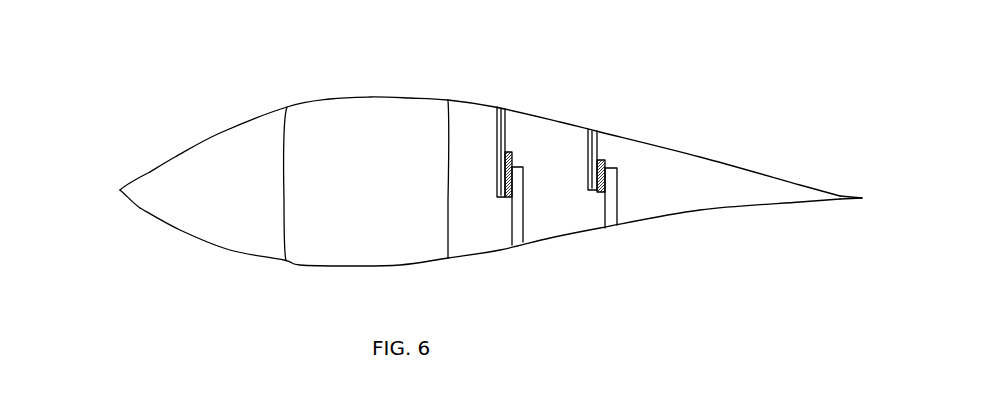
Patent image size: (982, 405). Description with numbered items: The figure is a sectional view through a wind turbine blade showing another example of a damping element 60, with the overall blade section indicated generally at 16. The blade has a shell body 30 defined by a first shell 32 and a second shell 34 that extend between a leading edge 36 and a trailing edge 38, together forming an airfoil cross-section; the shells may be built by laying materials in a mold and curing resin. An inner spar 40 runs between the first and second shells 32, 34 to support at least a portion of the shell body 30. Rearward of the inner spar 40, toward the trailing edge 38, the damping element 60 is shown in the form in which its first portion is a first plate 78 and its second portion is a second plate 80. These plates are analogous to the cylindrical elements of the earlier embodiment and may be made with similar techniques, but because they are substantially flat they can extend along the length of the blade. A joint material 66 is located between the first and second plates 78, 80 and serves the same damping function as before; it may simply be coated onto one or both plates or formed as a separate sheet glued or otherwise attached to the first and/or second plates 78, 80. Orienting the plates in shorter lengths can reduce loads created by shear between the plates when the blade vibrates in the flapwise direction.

The blade 16 is at (167, 68).
The shell body 30 is at (175, 157).
The first shell 32 is at (220, 133).
The second shell 34 is at (187, 232).
The leading edge 36 is at (120, 190).
The trailing edge 38 is at (865, 197).
The inner spar 40 is at (282, 190).
The damping element 60 is at (493, 220).
The joint material 66 is at (512, 153).
The first plate 78 is at (582, 140).
The second plate 80 is at (603, 215).